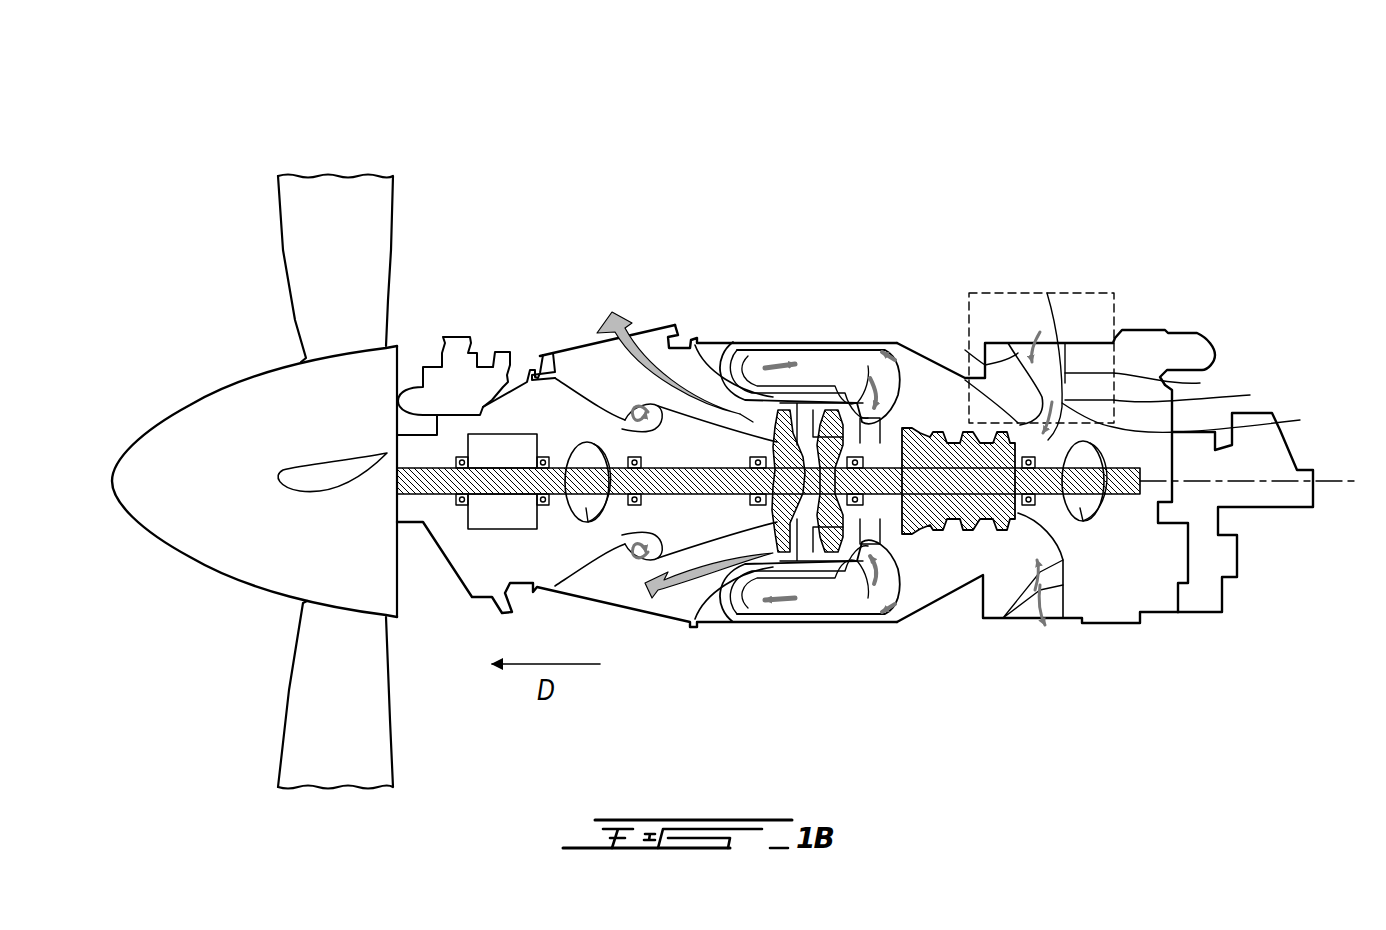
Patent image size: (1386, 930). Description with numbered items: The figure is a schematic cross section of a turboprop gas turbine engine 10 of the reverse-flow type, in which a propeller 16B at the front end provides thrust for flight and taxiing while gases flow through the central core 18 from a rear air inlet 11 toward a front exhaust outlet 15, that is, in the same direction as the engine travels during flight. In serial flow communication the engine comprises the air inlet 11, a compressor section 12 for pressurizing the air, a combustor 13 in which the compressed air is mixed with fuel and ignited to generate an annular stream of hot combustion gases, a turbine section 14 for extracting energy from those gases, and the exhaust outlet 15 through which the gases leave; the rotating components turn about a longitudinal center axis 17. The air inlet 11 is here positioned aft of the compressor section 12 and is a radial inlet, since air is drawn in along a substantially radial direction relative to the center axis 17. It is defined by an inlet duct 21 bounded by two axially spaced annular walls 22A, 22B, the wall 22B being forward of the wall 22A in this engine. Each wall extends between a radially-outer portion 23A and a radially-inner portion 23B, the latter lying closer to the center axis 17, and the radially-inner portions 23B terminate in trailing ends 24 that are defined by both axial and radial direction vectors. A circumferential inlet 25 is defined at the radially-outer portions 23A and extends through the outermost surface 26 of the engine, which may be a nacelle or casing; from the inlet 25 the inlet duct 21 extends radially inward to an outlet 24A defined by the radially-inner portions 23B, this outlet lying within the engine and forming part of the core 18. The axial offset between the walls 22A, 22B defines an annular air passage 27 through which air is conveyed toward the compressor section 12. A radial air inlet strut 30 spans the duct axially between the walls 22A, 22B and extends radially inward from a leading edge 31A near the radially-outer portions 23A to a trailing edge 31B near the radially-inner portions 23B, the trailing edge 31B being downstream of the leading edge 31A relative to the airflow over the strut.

The gas turbine engine 10 is at (1170, 210).
The air inlet 11 is at (1065, 322).
The compressor section 12 is at (967, 535).
The combustor 13 is at (830, 592).
The turbine section 14 is at (803, 548).
The exhaust outlet 15 is at (662, 316).
The propeller 16B is at (372, 733).
The longitudinal center axis 17 is at (1335, 490).
The central core 18 is at (893, 532).
The inlet duct 21 is at (1080, 357).
The annular wall 22A is at (1083, 398).
The annular wall 22B is at (983, 360).
The radially-outer portion 23A is at (990, 322).
The radially-inner portion 23B is at (1003, 414).
The trailing ends 24 is at (1063, 468).
The outlet of the inlet duct 24A is at (1042, 605).
The inlet 25 is at (1018, 355).
The outermost surface 26 is at (1093, 345).
The annular air passage 27 is at (1100, 450).
The radial air inlet strut 30 is at (1250, 395).
The leading edge 31A is at (1050, 360).
The trailing edge 31B is at (1195, 418).